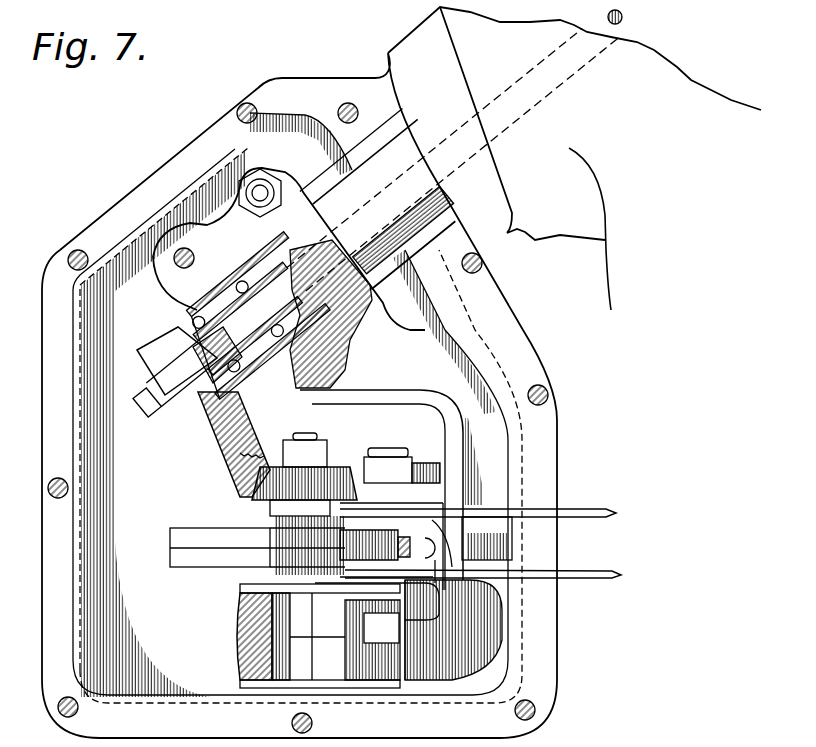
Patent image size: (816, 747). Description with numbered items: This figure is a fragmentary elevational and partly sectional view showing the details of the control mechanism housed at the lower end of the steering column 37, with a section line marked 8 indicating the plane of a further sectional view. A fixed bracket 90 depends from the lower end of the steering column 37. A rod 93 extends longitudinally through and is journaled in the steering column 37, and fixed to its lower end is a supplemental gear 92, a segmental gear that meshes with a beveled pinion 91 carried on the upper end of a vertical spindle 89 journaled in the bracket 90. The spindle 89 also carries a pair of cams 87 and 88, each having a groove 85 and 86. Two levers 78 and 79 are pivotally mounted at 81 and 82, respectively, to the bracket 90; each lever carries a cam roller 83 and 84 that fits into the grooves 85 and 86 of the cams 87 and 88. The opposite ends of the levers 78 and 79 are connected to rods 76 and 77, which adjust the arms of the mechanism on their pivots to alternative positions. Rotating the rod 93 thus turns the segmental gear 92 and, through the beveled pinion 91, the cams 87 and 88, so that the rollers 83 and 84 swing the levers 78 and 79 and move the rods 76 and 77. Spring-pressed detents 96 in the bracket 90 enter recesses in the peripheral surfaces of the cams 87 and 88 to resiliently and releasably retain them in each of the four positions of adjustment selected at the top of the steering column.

The steering column 37 is at (392, 184).
The rod 93 is at (287, 270).
The supplemental gear 92 is at (243, 455).
The beveled pinion 91 is at (334, 465).
The cam 87 is at (190, 528).
The cam 88 is at (187, 568).
The groove 85 is at (333, 548).
The groove 86 is at (333, 568).
The pivot 81 is at (385, 458).
The lever 78 is at (396, 525).
The rod 76 is at (579, 515).
The rod 77 is at (587, 580).
The spring-pressed detents 96 is at (450, 543).
The lever 79 is at (382, 588).
The vertical spindle 89 is at (245, 640).
The pivot 82 is at (385, 663).
The cam roller 83 is at (432, 527).
The cam roller 84 is at (435, 567).
The fixed bracket 90 is at (495, 636).
The section line 8- 8 is at (126, 548).